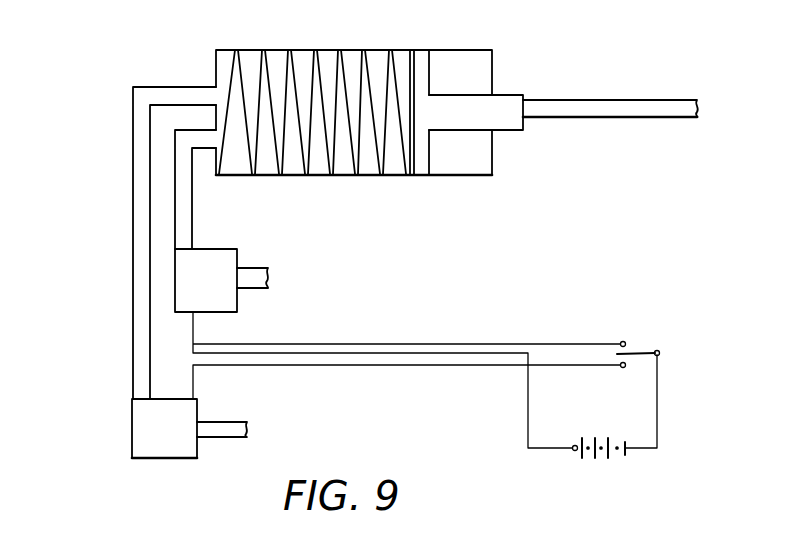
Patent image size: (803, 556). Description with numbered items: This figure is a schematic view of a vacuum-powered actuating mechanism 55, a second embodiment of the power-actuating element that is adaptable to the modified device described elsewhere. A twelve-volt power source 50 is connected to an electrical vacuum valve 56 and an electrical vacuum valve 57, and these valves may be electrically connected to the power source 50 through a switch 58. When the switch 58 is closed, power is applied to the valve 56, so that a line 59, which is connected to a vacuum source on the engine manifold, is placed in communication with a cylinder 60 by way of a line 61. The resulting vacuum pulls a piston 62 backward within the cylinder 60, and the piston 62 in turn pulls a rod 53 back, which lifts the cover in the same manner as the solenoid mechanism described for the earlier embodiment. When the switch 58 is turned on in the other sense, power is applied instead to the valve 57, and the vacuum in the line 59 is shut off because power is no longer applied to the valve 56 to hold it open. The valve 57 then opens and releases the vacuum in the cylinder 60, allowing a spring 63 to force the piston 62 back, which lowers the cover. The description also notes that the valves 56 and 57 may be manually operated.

The power source 50 is at (598, 458).
The rod 53 is at (633, 113).
The actuating mechanism 55 is at (119, 79).
The electrical vacuum valve 56 is at (176, 458).
The electrical vacuum valve 57 is at (218, 258).
The switch 58 is at (623, 342).
The line 59 is at (220, 422).
The cylinder 60 is at (352, 57).
The line 61 is at (133, 175).
The piston 62 is at (422, 62).
The spring 63 is at (267, 68).